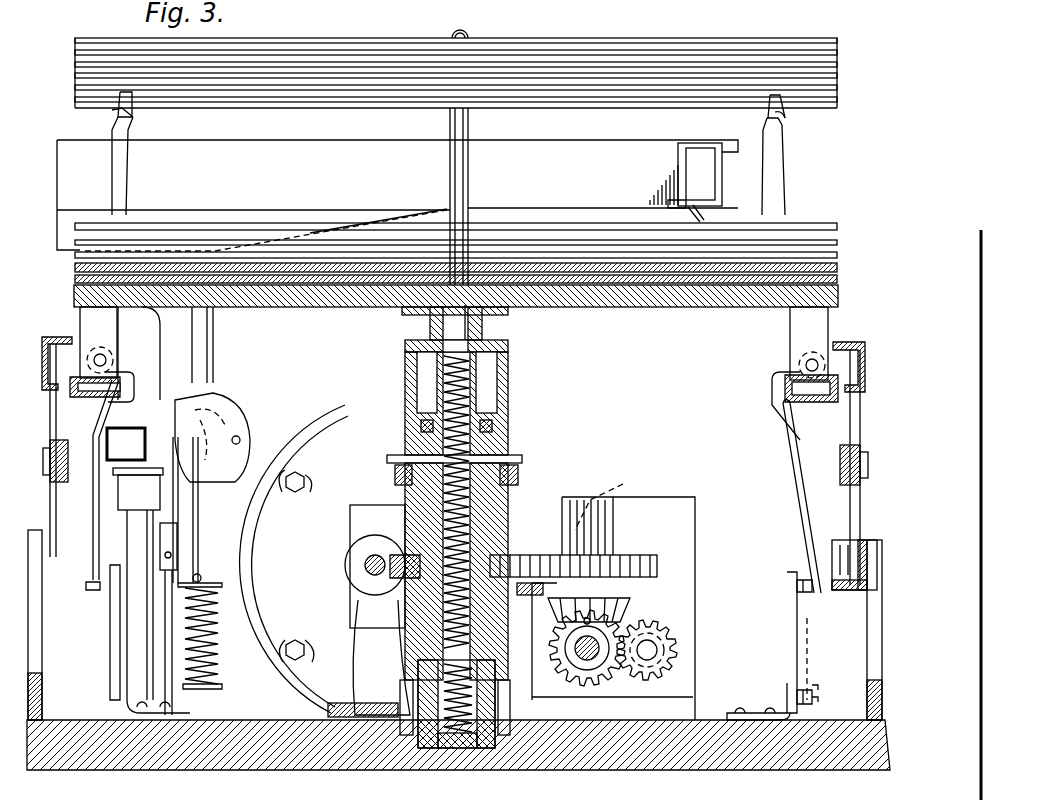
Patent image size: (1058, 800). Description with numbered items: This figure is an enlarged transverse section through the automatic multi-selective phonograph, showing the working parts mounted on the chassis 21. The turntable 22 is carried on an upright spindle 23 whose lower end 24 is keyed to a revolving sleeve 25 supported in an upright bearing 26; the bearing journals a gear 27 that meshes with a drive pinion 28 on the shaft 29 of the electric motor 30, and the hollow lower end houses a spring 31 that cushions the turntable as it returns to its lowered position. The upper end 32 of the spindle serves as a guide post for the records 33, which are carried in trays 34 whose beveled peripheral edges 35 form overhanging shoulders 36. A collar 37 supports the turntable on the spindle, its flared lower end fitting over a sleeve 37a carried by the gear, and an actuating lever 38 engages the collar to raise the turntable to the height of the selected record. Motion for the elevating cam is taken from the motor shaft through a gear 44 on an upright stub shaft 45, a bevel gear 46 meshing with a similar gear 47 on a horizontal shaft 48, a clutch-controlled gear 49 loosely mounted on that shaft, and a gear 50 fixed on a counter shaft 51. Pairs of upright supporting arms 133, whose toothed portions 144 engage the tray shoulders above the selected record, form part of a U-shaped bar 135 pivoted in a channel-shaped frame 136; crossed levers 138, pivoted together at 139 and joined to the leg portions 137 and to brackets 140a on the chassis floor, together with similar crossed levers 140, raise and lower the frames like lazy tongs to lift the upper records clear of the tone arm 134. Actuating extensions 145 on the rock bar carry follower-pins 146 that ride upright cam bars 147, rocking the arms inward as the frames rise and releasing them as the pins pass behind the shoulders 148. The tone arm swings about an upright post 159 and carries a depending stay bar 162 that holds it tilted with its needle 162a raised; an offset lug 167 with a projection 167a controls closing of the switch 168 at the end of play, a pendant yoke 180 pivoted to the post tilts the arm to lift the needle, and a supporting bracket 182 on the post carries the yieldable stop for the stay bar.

The chassis 21 is at (680, 763).
The turntable 22 is at (676, 308).
The upright spindle 23 is at (446, 326).
The lower end of spindle 24 is at (480, 412).
The revolving sleeve 25 is at (505, 437).
The upright bearing 26 is at (430, 502).
The gear 27 is at (372, 598).
The drive pinion 28 is at (368, 548).
The motor shaft 29 is at (365, 566).
The electric motor 30 is at (347, 405).
The spring 31 is at (440, 757).
The upper end of spindle 32 is at (468, 172).
The records 33 is at (576, 262).
The trays 34 is at (606, 112).
The peripheral edges of trays 35 is at (838, 42).
The overhanging shoulders 36 is at (838, 70).
The collar 37 is at (499, 326).
The sleeve 37a is at (420, 447).
The actuating lever 38 is at (528, 483).
The gear 44 is at (573, 564).
The upright stub shaft 45 is at (613, 593).
The bevel gear 46 is at (620, 603).
The bevel gear 47 is at (573, 682).
The horizontal shaft 48 is at (592, 660).
The clutch-controlled gear 49 is at (600, 660).
The gear 50 is at (678, 653).
The counter shaft 51 is at (653, 641).
The upright supporting arms 133 is at (118, 175).
The tone arm 134 is at (320, 130).
The U-shaped bar 135 is at (130, 383).
The frame 136 is at (105, 396).
The leg portions 137 is at (878, 330).
The crossed levers 138 is at (858, 426).
The pivot 139 is at (872, 472).
The crossed levers 140 is at (854, 565).
The brackets 140a is at (872, 630).
The toothed record-engaging portions 144 is at (135, 118).
The actuating extensions 145 is at (808, 547).
The follower-pins 146 is at (796, 588).
The upright cam bars 147 is at (113, 658).
The shoulders 148 is at (810, 684).
The upright post 159 is at (135, 625).
The stay bar 162 is at (207, 333).
The reproducing needle 162a is at (695, 208).
The offset lug 167 is at (228, 412).
The projection 167a is at (240, 440).
The switch 168 is at (178, 490).
The pendant yoke 180 is at (172, 336).
The supporting bracket 182 is at (222, 394).